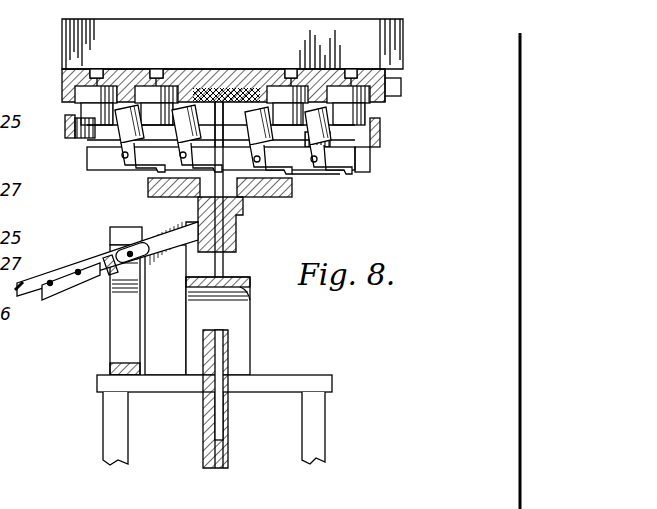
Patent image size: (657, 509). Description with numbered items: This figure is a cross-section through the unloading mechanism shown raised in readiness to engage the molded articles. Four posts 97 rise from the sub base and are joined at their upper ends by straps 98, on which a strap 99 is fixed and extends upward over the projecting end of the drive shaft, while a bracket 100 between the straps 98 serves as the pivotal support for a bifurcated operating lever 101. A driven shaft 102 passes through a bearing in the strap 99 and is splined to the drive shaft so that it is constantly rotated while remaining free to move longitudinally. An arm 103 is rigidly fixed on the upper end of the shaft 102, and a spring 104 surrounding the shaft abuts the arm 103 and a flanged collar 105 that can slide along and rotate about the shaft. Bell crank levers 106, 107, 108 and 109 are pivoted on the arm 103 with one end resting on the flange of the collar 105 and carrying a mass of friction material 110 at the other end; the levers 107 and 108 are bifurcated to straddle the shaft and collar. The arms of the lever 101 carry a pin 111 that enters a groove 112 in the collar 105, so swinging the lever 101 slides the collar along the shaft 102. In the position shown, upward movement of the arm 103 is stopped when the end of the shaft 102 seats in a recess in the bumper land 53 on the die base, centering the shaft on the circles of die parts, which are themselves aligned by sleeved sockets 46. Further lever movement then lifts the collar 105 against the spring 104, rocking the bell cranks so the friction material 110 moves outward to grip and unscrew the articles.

The sleeved sockets 46 is at (78, 126).
The stop block or land 53 is at (228, 100).
The posts 97 is at (103, 430).
The straps 98 is at (326, 385).
The strap 99 is at (250, 296).
The bracket 100 is at (118, 310).
The bifurcated operating lever 101 is at (62, 272).
The driven shaft 102 is at (215, 262).
The arm 103 is at (358, 160).
The spring 104 is at (244, 205).
The flanged collar 105 is at (240, 245).
The bell crank lever 106 is at (115, 162).
The bell crank lever 107 is at (160, 168).
The bell crank lever 108 is at (280, 160).
The bell crank lever 109 is at (328, 158).
The friction material 110 is at (122, 130).
The pin 111 is at (240, 230).
The groove 112 is at (198, 228).